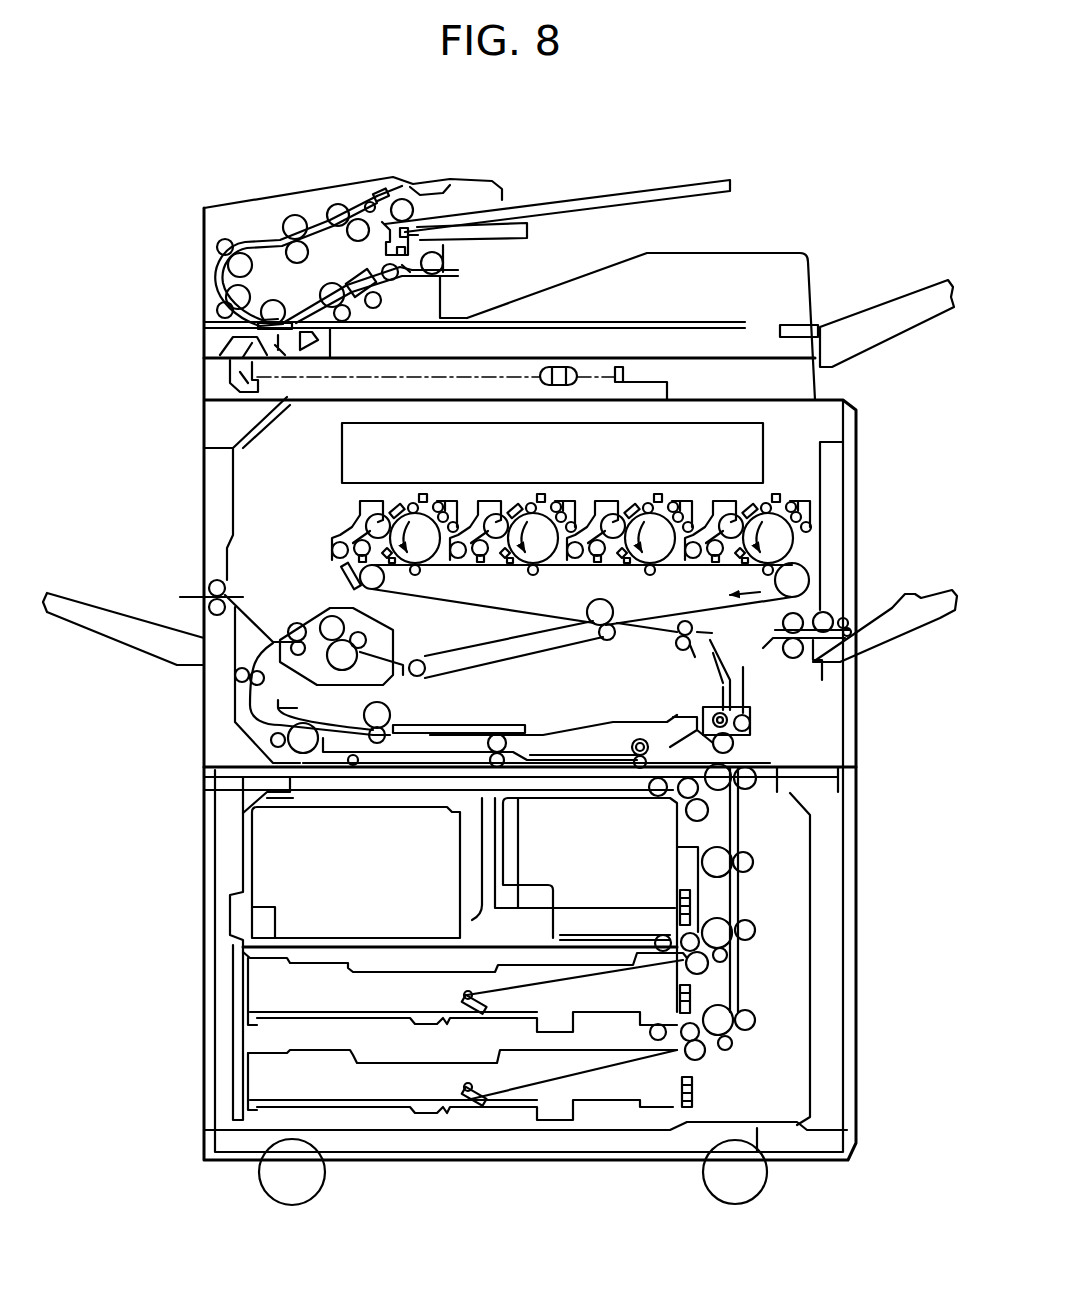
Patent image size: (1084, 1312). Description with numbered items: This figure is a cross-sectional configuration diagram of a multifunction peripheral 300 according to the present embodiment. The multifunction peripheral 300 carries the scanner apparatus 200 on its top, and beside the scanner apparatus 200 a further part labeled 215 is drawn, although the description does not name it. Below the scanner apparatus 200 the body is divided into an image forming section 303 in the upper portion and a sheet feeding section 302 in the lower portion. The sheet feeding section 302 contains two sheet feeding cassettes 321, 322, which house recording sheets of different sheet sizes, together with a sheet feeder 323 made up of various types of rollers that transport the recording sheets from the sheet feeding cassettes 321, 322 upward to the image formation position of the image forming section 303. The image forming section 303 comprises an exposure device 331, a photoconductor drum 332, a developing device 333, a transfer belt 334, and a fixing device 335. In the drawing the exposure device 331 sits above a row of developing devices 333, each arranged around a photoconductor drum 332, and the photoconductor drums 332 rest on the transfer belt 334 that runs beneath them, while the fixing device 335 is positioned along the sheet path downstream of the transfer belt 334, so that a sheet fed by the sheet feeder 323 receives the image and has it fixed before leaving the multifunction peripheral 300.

The multifunction peripheral 300 is at (776, 137).
The scanner apparatus 200 is at (197, 251).
The scanner (image reading unit) 215 is at (833, 266).
The image forming section 303 is at (191, 687).
The sheet feeding section 302 is at (194, 946).
The exposure device 331 is at (347, 447).
The developing device 333 is at (457, 505).
The photoconductor drum 332 is at (430, 553).
The transfer belt 334 is at (453, 607).
The fixing device 335 is at (317, 608).
The sheet feeder 323 is at (753, 912).
The sheet feeding cassette 322 is at (390, 1018).
The sheet feeding cassette 321 is at (487, 1113).